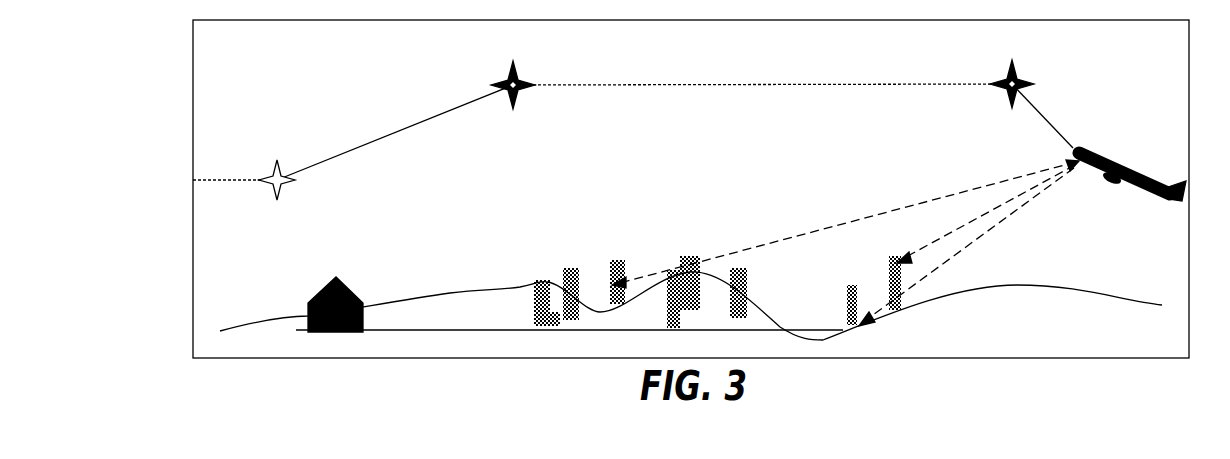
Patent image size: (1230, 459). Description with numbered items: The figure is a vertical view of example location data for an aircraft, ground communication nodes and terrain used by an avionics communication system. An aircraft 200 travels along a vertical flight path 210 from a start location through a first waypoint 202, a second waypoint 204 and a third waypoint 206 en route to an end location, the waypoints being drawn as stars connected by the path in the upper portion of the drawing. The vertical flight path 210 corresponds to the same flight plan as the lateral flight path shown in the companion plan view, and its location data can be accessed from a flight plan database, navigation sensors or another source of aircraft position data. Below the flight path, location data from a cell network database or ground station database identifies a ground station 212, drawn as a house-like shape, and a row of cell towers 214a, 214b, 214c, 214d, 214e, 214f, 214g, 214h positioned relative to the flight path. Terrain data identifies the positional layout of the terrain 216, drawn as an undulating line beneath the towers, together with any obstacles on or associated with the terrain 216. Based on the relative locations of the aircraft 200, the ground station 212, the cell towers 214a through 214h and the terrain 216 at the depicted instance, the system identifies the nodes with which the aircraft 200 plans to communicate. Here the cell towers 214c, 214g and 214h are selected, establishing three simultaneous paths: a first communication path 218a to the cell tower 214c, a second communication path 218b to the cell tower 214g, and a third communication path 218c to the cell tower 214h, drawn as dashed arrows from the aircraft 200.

The aircraft 200 is at (1122, 166).
The first waypoint 202 is at (1020, 73).
The second waypoint 204 is at (522, 72).
The third waypoint 206 is at (273, 170).
The vertical flight path 210 is at (393, 131).
The ground station 212 is at (355, 293).
The cell tower 214a is at (543, 280).
The cell tower 214b is at (571, 268).
The cell tower 214c is at (617, 260).
The cell tower 214d is at (673, 276).
The cell tower 214e is at (690, 262).
The cell tower 214f is at (740, 268).
The cell tower 214g is at (853, 285).
The cell tower 214h is at (898, 258).
The terrain 216 is at (458, 293).
The first communication path 218a is at (978, 188).
The second communication path 218b is at (1036, 197).
The third communication path 218c is at (981, 224).